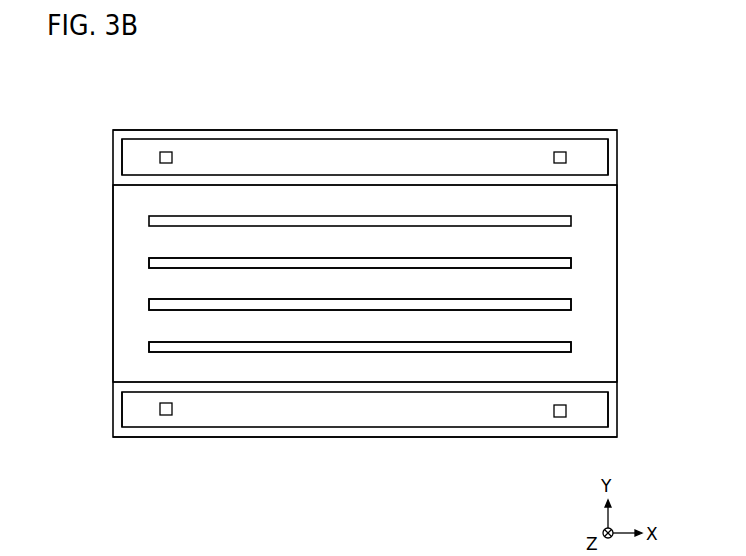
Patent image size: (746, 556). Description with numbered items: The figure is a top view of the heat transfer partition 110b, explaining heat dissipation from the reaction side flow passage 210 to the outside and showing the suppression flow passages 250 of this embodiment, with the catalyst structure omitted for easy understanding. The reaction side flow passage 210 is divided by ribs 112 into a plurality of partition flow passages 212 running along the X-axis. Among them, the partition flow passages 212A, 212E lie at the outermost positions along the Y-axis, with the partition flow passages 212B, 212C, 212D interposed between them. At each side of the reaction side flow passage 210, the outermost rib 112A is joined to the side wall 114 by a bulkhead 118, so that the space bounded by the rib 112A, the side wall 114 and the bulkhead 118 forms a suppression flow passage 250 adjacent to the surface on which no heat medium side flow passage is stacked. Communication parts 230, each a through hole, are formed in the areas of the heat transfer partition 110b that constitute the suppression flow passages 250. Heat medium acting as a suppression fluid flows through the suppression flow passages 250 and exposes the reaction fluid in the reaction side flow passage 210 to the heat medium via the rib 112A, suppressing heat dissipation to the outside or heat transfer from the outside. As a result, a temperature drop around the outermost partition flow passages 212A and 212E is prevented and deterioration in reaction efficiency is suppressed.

The reaction side flow passage 210 is at (455, 88).
The side wall 114 is at (507, 130).
The heat transfer partition 110b is at (604, 213).
The outermost rib 112A is at (197, 175).
The suppression flow passage 250 is at (461, 168).
The bulkhead 118 is at (112, 156).
The communication part 230 is at (166, 152).
The partition flow passage 212 is at (360, 283).
The outermost partition flow passage 212A is at (502, 210).
The partition flow passage 212B is at (502, 252).
The partition flow passage 212C is at (502, 293).
The partition flow passage 212D is at (502, 335).
The outermost partition flow passage 212E is at (502, 376).
The rib 112 is at (571, 262).